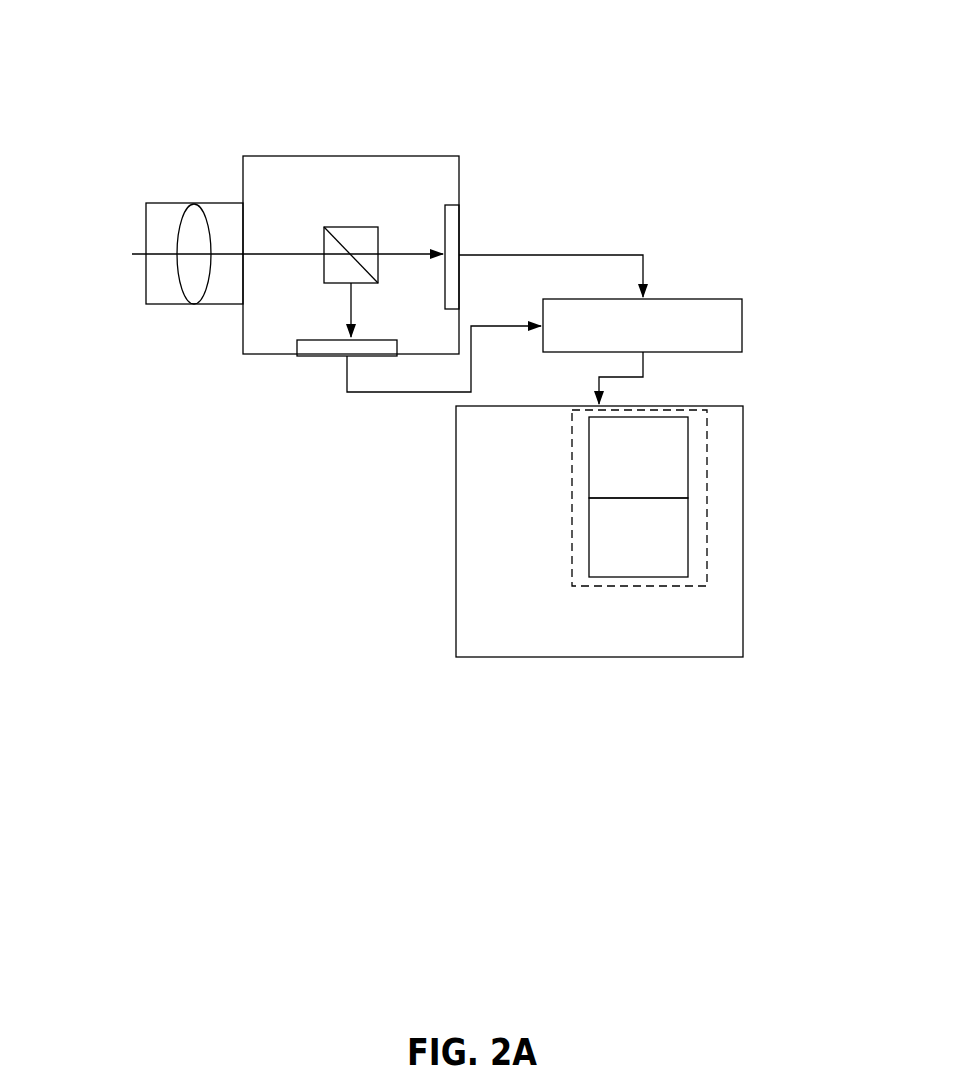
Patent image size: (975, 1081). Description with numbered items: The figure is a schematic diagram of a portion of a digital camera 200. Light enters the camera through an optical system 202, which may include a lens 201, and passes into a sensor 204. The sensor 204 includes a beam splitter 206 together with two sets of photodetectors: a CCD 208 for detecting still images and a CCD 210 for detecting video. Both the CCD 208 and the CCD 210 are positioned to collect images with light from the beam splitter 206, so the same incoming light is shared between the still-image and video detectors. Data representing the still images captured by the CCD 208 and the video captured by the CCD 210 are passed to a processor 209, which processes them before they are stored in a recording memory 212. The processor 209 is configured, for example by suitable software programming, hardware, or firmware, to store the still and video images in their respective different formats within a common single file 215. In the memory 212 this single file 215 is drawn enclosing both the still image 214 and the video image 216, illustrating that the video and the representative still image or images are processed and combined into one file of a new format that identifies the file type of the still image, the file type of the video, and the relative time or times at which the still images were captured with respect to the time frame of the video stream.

The digital camera 200 is at (172, 88).
The lens 201 is at (193, 290).
The optical system 202 is at (172, 203).
The sensor 204 is at (326, 155).
The beam splitter 206 is at (365, 226).
The CCD 208 is at (455, 213).
The processor 209 is at (746, 316).
The CCD 210 is at (325, 346).
The recording memory 212 is at (735, 417).
The still image 214 is at (618, 484).
The single file 215 is at (571, 497).
The video image 216 is at (618, 566).